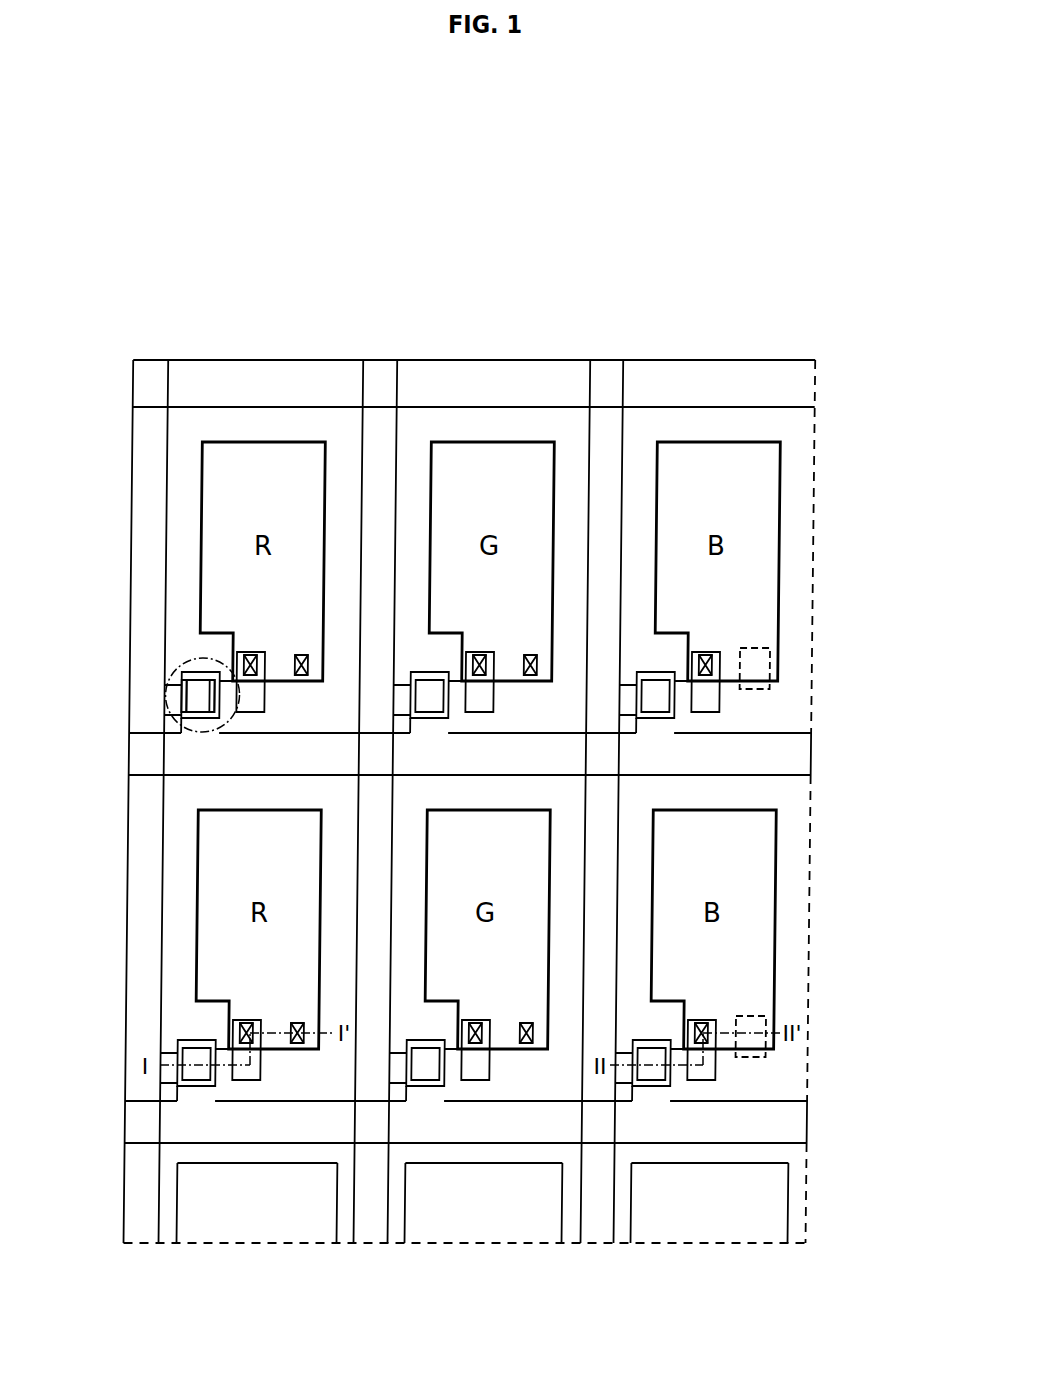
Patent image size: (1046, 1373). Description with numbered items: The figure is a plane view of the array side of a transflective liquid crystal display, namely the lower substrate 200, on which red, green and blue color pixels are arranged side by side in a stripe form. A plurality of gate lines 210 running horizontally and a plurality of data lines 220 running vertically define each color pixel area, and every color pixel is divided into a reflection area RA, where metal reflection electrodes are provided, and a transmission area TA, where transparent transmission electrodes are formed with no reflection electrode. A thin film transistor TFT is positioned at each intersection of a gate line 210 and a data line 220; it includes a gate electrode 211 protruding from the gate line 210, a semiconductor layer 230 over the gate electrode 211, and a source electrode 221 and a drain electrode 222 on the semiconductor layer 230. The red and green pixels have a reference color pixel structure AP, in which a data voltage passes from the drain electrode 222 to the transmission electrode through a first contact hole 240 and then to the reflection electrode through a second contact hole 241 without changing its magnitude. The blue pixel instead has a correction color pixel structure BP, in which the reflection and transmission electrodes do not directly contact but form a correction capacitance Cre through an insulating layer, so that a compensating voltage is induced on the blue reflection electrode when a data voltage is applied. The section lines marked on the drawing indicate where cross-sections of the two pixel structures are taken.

The lower substrate 200 is at (212, 175).
The gate line 210 is at (790, 755).
The gate electrode 211 is at (196, 732).
The data line 220 is at (150, 370).
The source electrode 221 is at (177, 700).
The drain electrode 222 is at (228, 680).
The semiconductor layer 230 is at (205, 672).
The first contact hole 240 is at (240, 1033).
The second contact hole 241 is at (300, 1046).
The thin film transistor TFT is at (207, 719).
The reference color pixel structure AP is at (258, 345).
The correction color pixel structure BP is at (714, 345).
The reflection area RA is at (185, 460).
The transmission area TA is at (215, 520).
The correction capacitance Cre is at (775, 665).